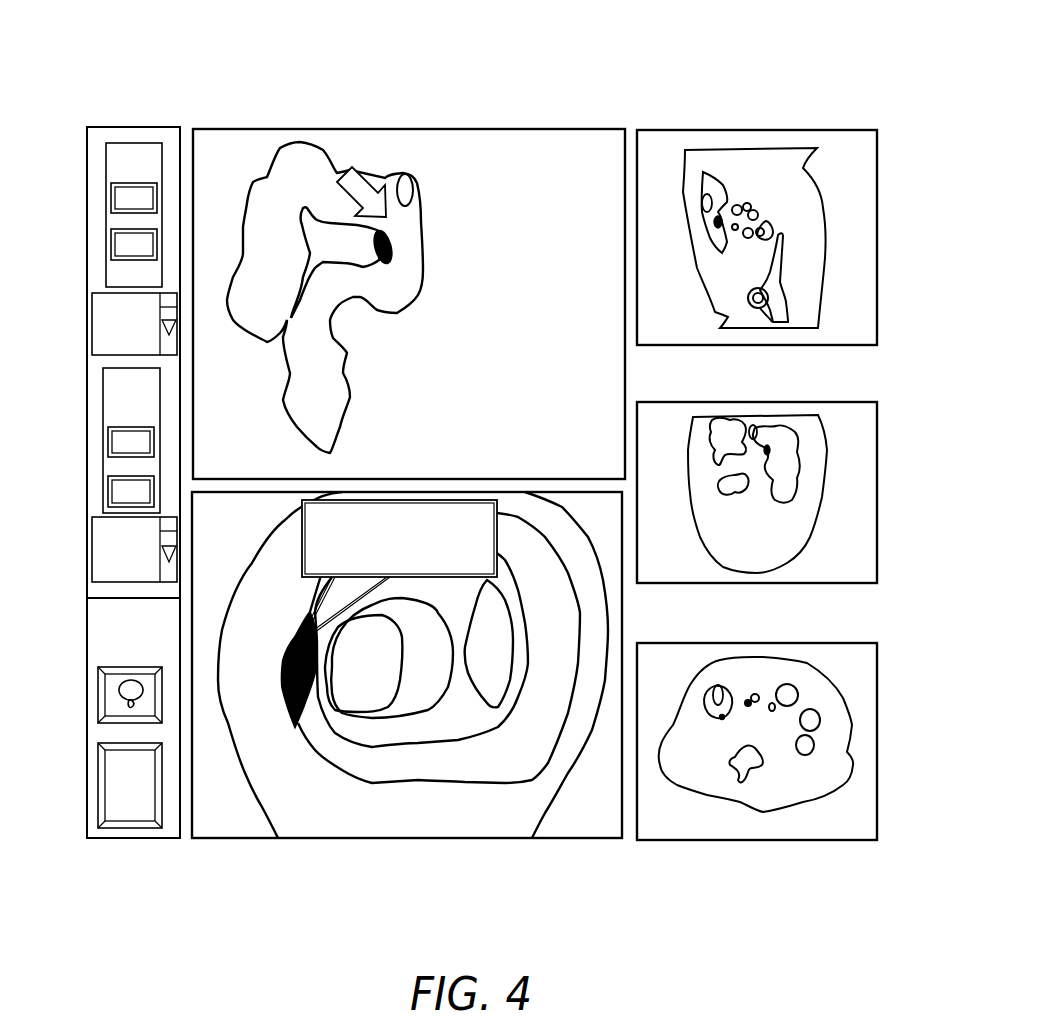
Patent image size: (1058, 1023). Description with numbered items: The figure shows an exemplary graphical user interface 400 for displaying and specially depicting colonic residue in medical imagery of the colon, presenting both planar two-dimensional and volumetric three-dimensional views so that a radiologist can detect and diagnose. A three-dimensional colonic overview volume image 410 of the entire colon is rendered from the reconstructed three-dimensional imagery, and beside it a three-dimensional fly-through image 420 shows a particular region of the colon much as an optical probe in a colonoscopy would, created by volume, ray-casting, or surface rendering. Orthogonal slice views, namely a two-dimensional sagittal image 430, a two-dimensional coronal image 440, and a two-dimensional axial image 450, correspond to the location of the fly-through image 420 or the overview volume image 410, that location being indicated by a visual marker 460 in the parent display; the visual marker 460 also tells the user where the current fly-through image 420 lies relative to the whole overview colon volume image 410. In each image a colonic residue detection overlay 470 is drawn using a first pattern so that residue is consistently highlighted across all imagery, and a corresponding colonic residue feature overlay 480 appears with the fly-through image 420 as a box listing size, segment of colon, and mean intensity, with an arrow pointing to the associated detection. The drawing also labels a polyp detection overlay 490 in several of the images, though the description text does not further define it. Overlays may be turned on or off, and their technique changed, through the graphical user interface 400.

The graphical user interface 400 is at (323, 78).
The 3-D colonic overview volume image 410 is at (498, 126).
The 3-D fly-through image 420 is at (350, 845).
The 2-D sagittal image 430 is at (750, 126).
The 2-D coronal image 440 is at (702, 396).
The 2-D axial image 450 is at (738, 846).
The visual marker 460 is at (352, 178).
The colonic residue detection overlay 470 is at (718, 228).
The colonic residue feature overlay 480 is at (313, 547).
The polyp detection overlay 490 is at (414, 200).